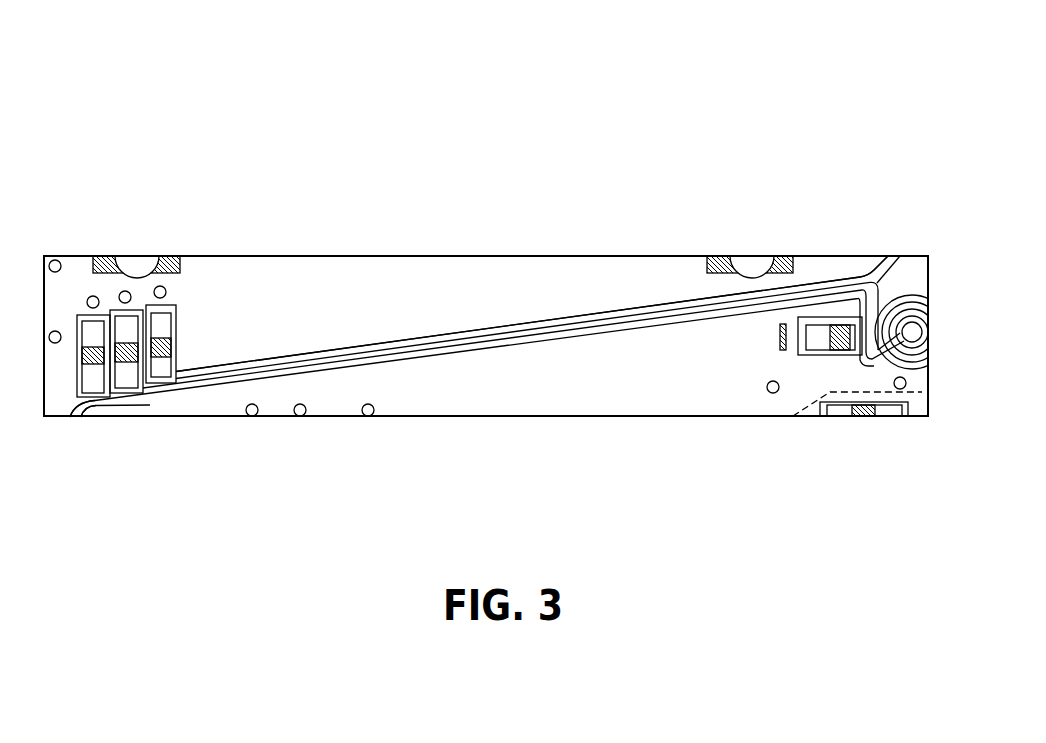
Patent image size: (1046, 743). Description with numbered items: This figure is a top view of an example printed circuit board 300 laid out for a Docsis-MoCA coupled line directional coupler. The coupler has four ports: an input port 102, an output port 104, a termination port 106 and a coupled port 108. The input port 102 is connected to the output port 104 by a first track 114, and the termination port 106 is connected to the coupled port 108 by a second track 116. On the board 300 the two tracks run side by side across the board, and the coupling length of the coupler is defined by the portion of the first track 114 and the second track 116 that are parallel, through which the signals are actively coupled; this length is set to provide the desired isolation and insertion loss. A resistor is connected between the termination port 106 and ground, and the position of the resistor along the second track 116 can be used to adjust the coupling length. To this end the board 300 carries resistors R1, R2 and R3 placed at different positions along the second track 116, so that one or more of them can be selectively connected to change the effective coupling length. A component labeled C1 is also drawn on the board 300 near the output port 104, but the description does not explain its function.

The printed circuit board 300 is at (565, 68).
The input port 102 is at (66, 418).
The output port 104 is at (927, 300).
The termination port 106 is at (178, 372).
The coupled port 108 is at (860, 276).
The first track 114 is at (483, 352).
The second track 116 is at (523, 323).
The resistor R1 is at (180, 344).
The resistor R2 is at (179, 346).
The resistor R3 is at (179, 345).
The capacitor C1 is at (808, 335).